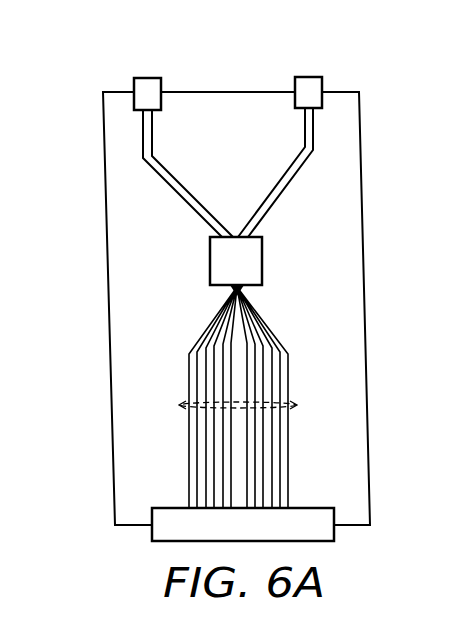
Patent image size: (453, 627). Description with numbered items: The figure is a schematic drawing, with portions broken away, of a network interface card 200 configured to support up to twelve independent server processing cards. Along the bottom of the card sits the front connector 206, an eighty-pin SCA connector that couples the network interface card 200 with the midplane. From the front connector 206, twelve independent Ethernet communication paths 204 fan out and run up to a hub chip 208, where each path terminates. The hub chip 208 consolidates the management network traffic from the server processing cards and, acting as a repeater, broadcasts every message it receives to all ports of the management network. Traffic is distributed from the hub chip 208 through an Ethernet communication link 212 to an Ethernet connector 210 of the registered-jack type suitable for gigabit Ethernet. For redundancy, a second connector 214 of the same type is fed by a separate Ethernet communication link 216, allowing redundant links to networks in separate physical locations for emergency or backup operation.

The network interface card 200 is at (82, 228).
The Ethernet communication paths 204 is at (300, 405).
The front connector 206 is at (153, 530).
The hub chip 208 is at (215, 258).
The RJ-45 Ethernet connector 210 is at (309, 77).
The Ethernet communication link 212 is at (283, 197).
The second RJ-45 connector 214 is at (146, 78).
The Ethernet communication link 216 is at (180, 198).